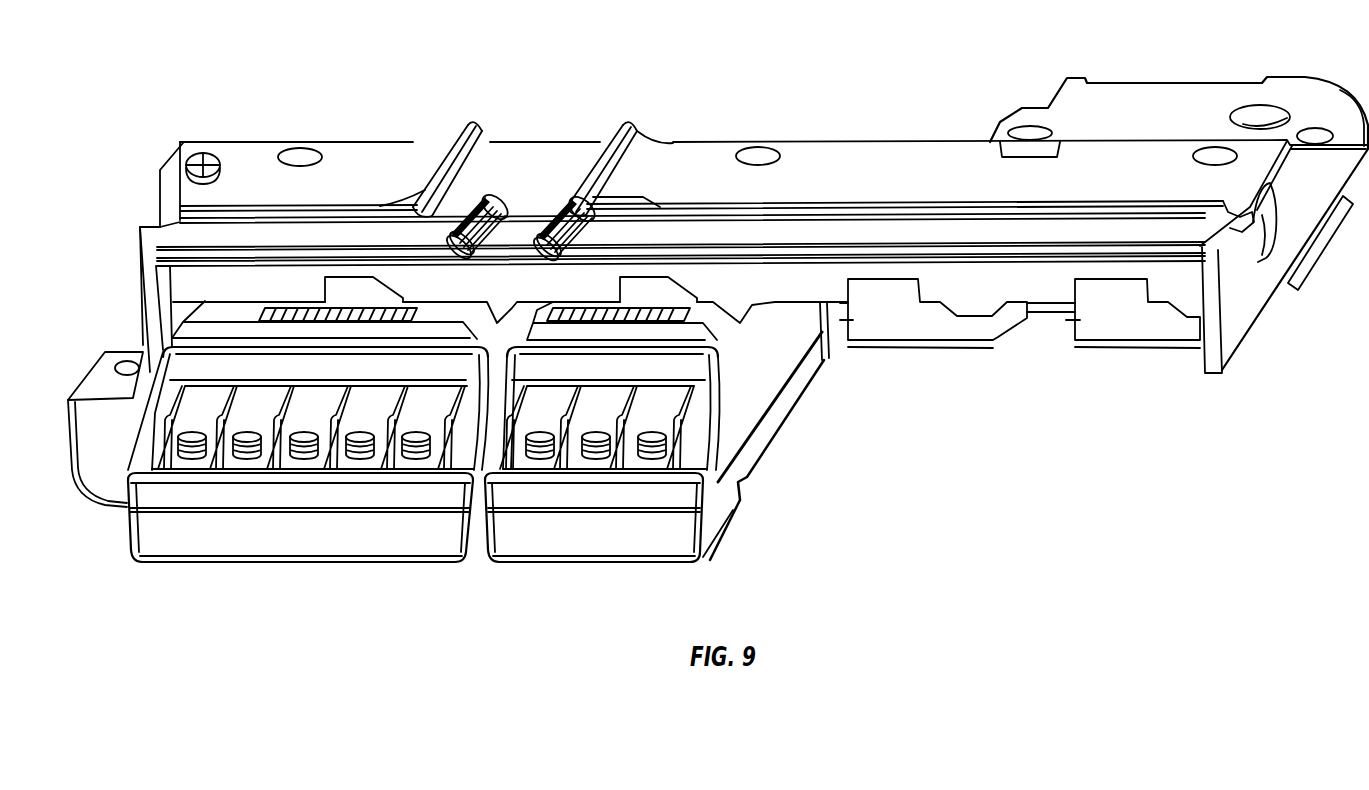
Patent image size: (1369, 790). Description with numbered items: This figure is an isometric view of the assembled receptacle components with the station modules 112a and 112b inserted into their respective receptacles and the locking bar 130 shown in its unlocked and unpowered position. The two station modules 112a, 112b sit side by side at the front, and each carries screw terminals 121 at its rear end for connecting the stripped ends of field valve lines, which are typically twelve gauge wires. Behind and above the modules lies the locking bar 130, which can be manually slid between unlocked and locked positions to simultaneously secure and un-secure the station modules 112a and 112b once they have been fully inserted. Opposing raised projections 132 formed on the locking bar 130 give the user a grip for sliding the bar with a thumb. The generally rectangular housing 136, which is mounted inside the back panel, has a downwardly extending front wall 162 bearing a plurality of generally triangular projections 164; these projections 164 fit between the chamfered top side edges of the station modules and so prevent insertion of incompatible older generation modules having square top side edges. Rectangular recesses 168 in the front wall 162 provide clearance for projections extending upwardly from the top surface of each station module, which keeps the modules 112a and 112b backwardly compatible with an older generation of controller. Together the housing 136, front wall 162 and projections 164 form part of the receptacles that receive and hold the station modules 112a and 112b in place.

The locking bar 130 is at (845, 155).
The housing 136 is at (150, 218).
The raised projections 132 is at (567, 207).
The projections 164 is at (182, 310).
The rectangular recesses 168 is at (380, 293).
The front wall 162 is at (1050, 272).
The screw terminals 121 is at (188, 452).
The station module 112a is at (274, 454).
The station module 112b is at (597, 568).